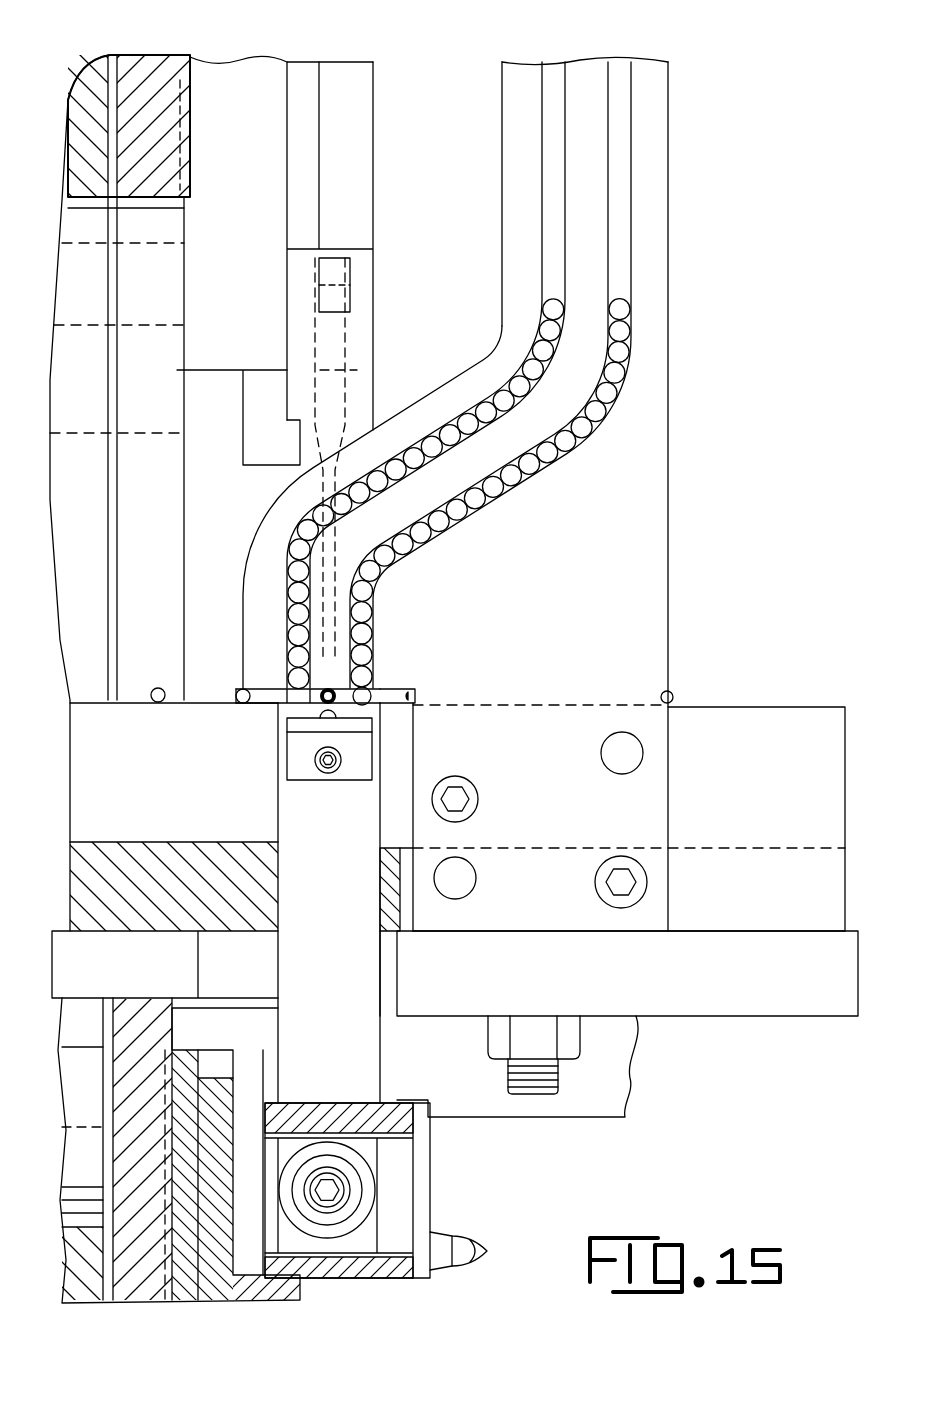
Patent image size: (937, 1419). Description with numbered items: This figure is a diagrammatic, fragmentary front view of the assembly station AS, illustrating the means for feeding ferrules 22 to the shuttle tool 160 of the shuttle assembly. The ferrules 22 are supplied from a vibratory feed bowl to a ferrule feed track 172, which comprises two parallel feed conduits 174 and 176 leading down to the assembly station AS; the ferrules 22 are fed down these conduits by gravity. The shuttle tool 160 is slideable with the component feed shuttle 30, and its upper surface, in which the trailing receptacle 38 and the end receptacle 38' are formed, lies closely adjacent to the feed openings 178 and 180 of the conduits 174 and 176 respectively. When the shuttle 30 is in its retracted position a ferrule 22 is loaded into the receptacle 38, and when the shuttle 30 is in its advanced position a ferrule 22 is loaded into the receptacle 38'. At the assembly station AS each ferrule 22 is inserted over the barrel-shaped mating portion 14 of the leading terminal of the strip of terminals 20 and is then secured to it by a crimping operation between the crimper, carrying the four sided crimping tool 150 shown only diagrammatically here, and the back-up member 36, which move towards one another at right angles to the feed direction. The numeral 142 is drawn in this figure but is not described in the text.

The mating portion 14 is at (158, 687).
The strip of terminals 20 is at (93, 690).
The ferrule 22 is at (560, 442).
The component feed shuttle 30 is at (233, 686).
The back-up member 36 is at (376, 140).
The trailing receptacle 38 is at (279, 758).
The end receptacle 38' is at (419, 722).
The threaded bore 142 is at (357, 370).
The crimping tool 150 is at (307, 778).
The shuttle tool 160 is at (290, 700).
The ferrule feed track 172 is at (668, 172).
The feed conduit 174 is at (548, 205).
The feed conduit 176 is at (622, 270).
The feed opening 178 is at (359, 507).
The feed opening 180 is at (388, 685).
The assembly station AS is at (433, 691).